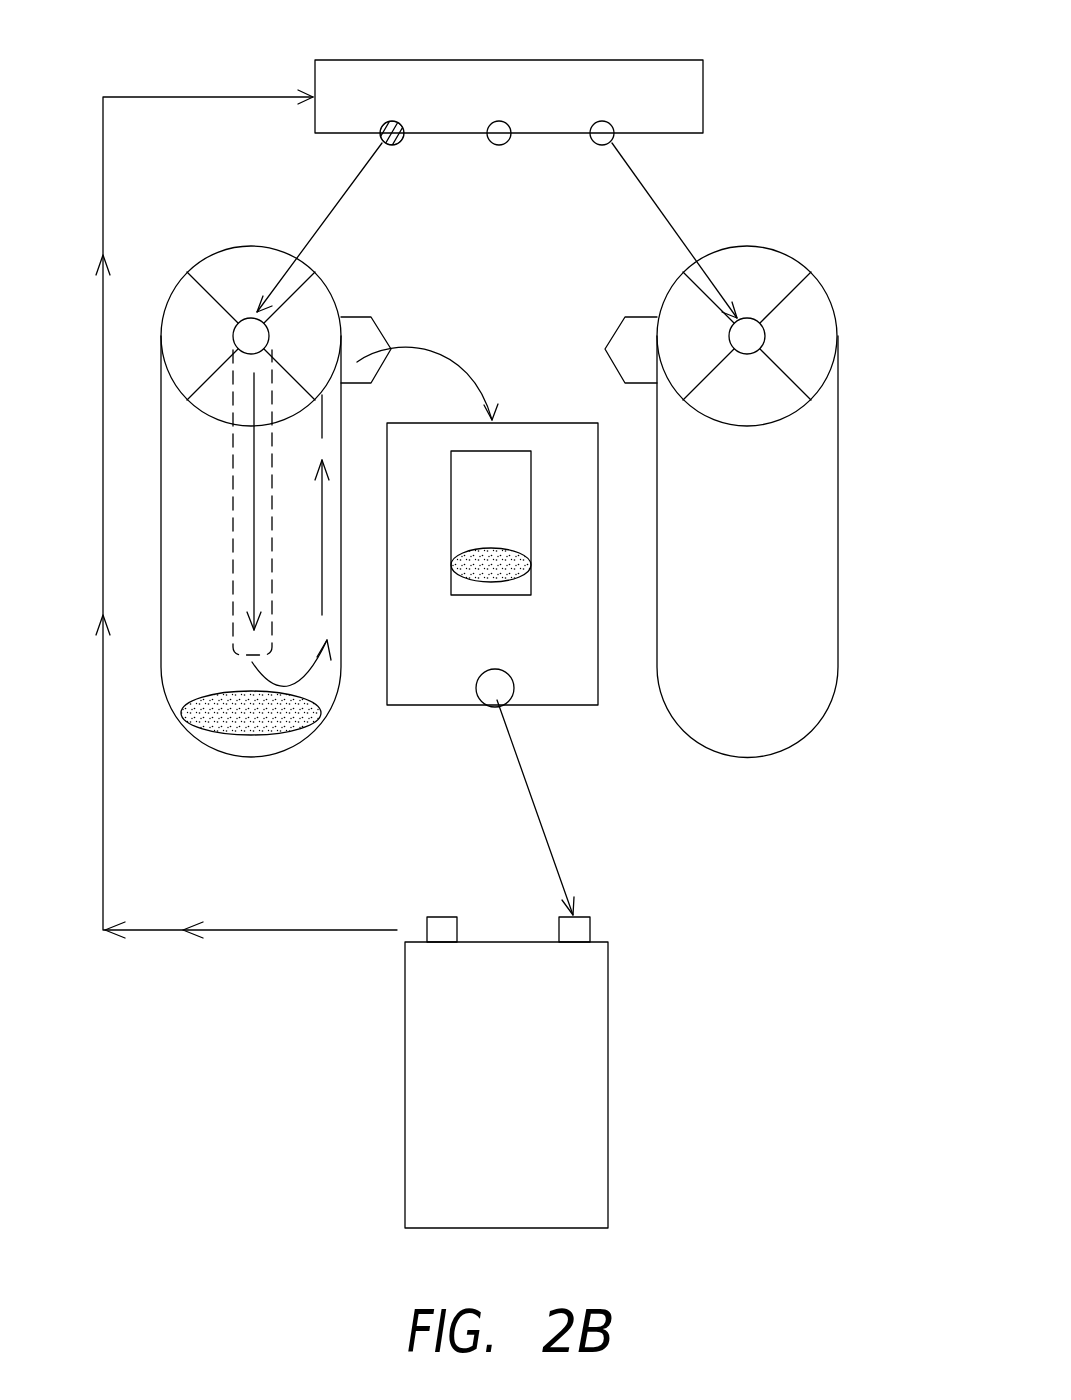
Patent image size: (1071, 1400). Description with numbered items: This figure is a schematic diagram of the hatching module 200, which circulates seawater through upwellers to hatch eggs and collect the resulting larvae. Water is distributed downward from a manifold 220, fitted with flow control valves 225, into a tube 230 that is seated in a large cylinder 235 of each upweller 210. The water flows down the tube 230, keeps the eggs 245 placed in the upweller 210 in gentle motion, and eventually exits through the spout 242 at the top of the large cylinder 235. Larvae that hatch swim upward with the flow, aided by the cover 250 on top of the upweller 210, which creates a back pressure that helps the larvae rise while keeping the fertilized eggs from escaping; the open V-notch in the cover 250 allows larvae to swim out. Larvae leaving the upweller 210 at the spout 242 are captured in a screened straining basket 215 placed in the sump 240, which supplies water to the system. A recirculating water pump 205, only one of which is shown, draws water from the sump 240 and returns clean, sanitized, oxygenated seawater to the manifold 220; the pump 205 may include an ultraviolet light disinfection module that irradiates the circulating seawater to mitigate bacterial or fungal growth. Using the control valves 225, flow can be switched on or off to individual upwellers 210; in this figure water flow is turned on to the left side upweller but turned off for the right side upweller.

The hatching module 200 is at (805, 107).
The pump 205 is at (610, 1095).
The upweller 210 is at (841, 533).
The straining basket 215 is at (481, 580).
The manifold 220 is at (507, 60).
The flow control valve 225 is at (594, 144).
The tube 230 is at (233, 565).
The large cylinder 235 is at (160, 418).
The sump 240 is at (577, 708).
The spout 242 is at (362, 317).
The eggs 245 is at (262, 714).
The cover 250 is at (800, 412).